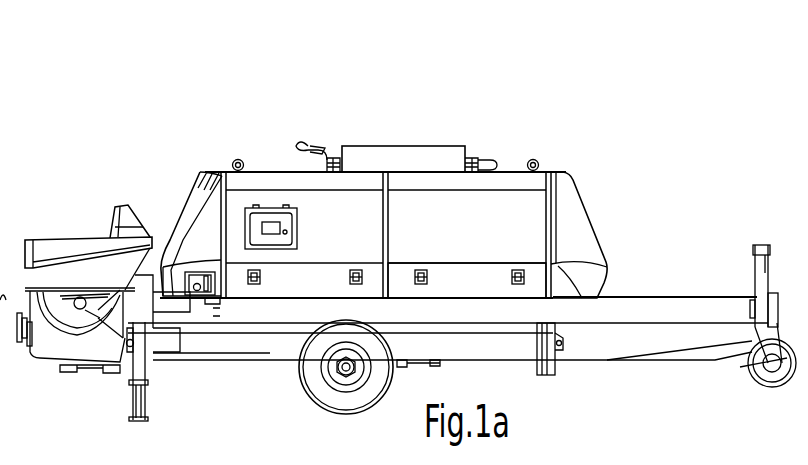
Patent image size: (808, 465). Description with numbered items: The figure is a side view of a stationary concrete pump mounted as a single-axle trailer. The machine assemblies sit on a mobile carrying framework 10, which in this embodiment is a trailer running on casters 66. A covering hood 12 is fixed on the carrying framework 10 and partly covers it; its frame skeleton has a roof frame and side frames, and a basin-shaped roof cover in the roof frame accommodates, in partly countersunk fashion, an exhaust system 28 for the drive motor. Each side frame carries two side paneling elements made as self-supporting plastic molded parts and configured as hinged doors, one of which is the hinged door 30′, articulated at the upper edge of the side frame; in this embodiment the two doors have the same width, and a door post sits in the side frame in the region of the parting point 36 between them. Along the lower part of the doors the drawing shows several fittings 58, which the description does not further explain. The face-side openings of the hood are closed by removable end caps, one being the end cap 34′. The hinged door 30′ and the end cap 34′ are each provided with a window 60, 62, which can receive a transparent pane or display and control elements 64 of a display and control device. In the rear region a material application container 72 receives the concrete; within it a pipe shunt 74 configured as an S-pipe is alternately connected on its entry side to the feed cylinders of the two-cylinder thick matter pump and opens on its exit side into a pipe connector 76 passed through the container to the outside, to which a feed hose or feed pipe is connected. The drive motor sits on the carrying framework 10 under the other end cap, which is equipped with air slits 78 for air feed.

The carrying framework 10 is at (517, 342).
The covering hood 12 is at (508, 197).
The exhaust system 28 is at (400, 158).
The side paneling element 30′ is at (315, 217).
The end cap 34′ is at (210, 217).
The parting point 36 is at (390, 222).
The latches 58 is at (347, 283).
The window 60 is at (288, 215).
The window 62 is at (199, 272).
The display and control elements 64 is at (207, 296).
The casters 66 is at (362, 398).
The material application container 72 is at (75, 268).
The pipe shunt 74 is at (7, 223).
The pipe connector 76 is at (20, 352).
The air slits 78 is at (55, 195).